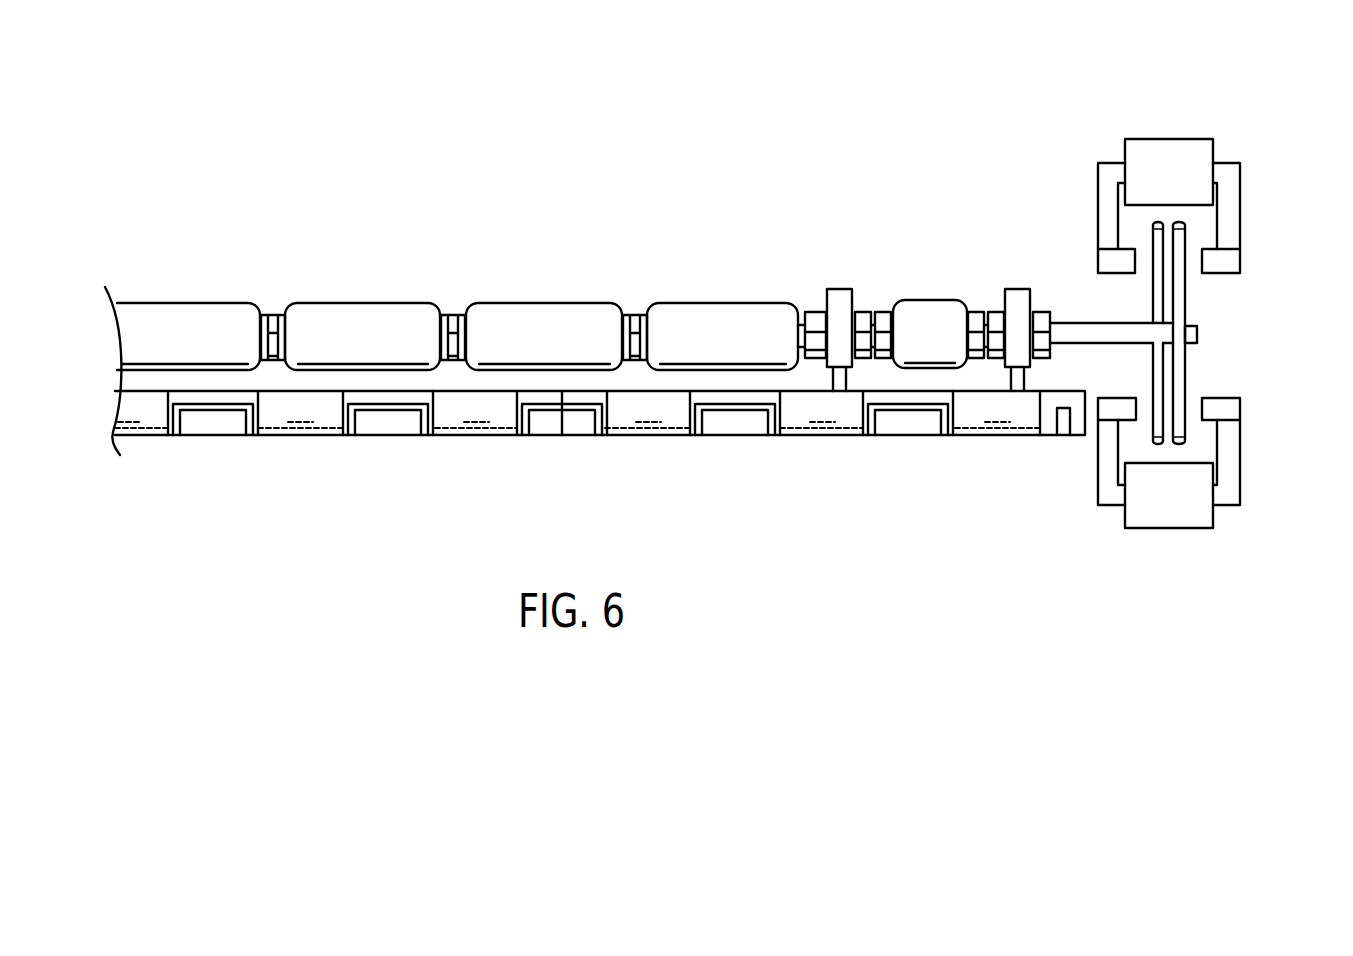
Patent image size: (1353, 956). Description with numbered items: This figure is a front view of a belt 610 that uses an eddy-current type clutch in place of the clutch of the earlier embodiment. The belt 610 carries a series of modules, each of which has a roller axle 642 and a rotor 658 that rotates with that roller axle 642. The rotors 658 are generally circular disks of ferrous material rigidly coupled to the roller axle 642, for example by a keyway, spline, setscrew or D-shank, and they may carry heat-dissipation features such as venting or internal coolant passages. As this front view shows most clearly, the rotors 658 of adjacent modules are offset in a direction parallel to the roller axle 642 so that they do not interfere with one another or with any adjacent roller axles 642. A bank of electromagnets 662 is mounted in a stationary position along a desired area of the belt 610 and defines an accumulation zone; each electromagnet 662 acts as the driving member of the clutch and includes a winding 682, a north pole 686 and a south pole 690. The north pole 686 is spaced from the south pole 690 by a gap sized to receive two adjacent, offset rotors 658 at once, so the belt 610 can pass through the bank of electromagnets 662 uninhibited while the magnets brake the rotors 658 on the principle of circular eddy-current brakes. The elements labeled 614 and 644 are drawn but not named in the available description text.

The belt 610 is at (298, 525).
The conveyor track 614 is at (466, 426).
The roller axle 642 is at (1082, 332).
The container 644 is at (398, 318).
The rotor 658 is at (1160, 398).
The electromagnet 662 is at (1266, 217).
The winding 682 is at (1173, 150).
The north pole 686 is at (1097, 261).
The south pole 690 is at (1223, 266).